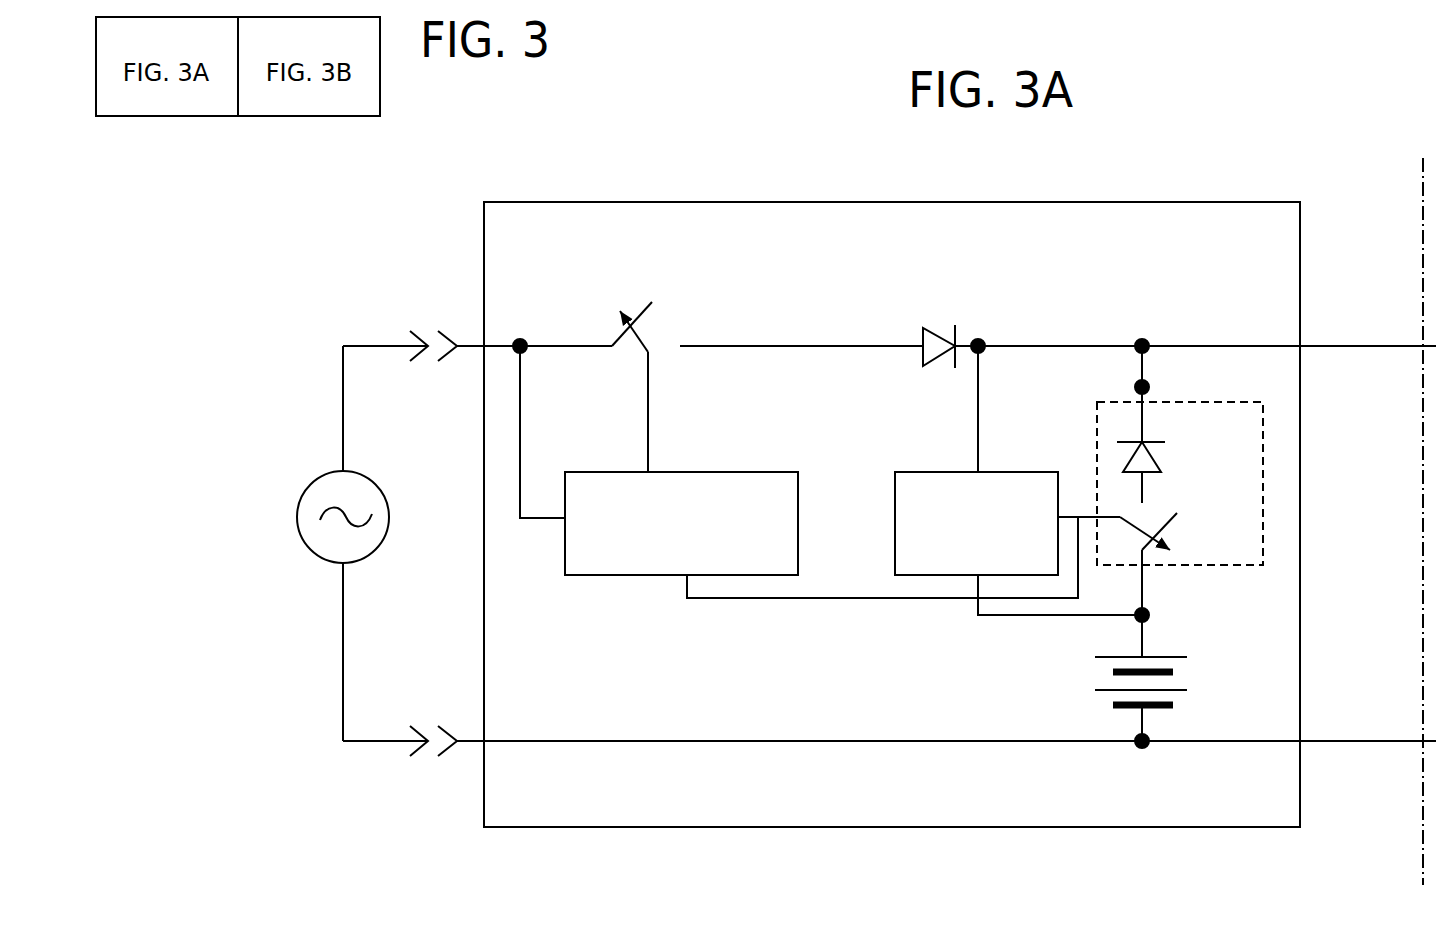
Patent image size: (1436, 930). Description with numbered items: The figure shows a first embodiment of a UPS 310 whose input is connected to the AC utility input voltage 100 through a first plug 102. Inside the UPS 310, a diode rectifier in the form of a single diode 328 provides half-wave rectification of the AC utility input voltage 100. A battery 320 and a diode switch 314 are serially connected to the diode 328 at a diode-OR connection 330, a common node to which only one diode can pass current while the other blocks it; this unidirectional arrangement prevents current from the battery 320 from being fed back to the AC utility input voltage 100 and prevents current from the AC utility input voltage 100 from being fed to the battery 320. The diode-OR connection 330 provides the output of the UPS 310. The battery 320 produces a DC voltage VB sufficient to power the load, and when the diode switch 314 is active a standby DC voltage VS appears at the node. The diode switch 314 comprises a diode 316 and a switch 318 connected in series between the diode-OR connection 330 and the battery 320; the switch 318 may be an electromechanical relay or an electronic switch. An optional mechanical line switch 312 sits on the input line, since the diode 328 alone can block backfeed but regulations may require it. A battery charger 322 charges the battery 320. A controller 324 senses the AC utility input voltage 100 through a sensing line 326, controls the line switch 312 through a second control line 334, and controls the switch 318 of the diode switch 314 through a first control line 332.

The AC utility input voltage 100 is at (302, 492).
The first plug 102 is at (412, 715).
The UPS 310 is at (613, 202).
The line switch 312 is at (650, 335).
The diode switch 314 is at (1218, 573).
The diode 316 is at (1155, 463).
The switch 318 is at (1158, 510).
The battery 320 is at (1100, 677).
The battery charger 322 is at (927, 473).
The controller 324 is at (735, 472).
The sensing line 326 is at (523, 392).
The diode 328 is at (938, 330).
The diode-OR connection 330 is at (1145, 340).
The first control line 332 is at (813, 600).
The second control line 334 is at (650, 403).